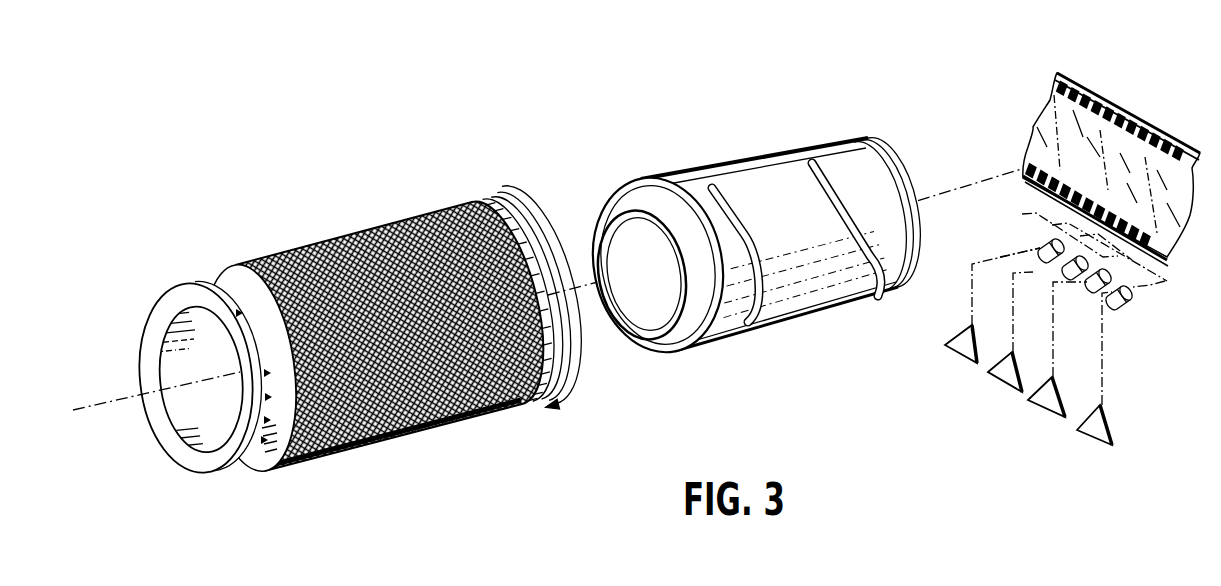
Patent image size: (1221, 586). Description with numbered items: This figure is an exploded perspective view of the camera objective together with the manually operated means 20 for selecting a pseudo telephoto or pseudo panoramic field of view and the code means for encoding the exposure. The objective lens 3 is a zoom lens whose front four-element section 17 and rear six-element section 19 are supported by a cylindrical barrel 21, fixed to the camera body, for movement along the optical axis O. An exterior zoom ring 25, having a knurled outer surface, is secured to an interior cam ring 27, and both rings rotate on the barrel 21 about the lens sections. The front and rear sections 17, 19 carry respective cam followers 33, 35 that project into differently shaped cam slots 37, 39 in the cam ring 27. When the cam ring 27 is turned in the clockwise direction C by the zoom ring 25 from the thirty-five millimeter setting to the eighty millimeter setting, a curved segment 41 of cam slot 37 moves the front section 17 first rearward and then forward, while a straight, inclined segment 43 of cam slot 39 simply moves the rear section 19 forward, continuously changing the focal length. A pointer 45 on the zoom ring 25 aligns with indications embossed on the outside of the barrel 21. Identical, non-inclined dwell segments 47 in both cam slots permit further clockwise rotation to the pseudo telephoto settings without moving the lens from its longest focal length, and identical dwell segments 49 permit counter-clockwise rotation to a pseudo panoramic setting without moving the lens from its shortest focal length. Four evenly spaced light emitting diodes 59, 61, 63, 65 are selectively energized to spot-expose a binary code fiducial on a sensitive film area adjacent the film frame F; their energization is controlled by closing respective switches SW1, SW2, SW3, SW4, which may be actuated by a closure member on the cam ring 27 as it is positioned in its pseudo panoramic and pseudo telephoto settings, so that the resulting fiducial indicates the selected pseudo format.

The manually operated means 20 is at (472, 136).
The objective lens 3 is at (630, 254).
The cylindrical barrel 21 is at (512, 220).
The rear six-element section 19 is at (749, 238).
The front four-element section 17 is at (657, 264).
The zoom ring 25 is at (393, 443).
The pointer 45 is at (250, 368).
The dwell segments 47 is at (812, 186).
The cam slot 37 is at (744, 233).
The cam slot 39 is at (842, 216).
The curved segment 41 is at (763, 268).
The straight, inclined segment 43 is at (866, 244).
The cam follower 33 is at (756, 308).
The cam follower 35 is at (878, 268).
The dwell segments 49 is at (753, 326).
The cam ring 27 is at (786, 291).
The light emitting diode 59 is at (1040, 245).
The light emitting diode 61 is at (1062, 265).
The light emitting diode 63 is at (1095, 279).
The light emitting diode 65 is at (1114, 295).
The film frame F is at (1107, 150).
The optical axis O is at (958, 190).
The clockwise direction C is at (557, 410).
The switch SW1 is at (958, 360).
The switch SW2 is at (990, 386).
The switch SW3 is at (1028, 408).
The switch SW4 is at (1076, 434).